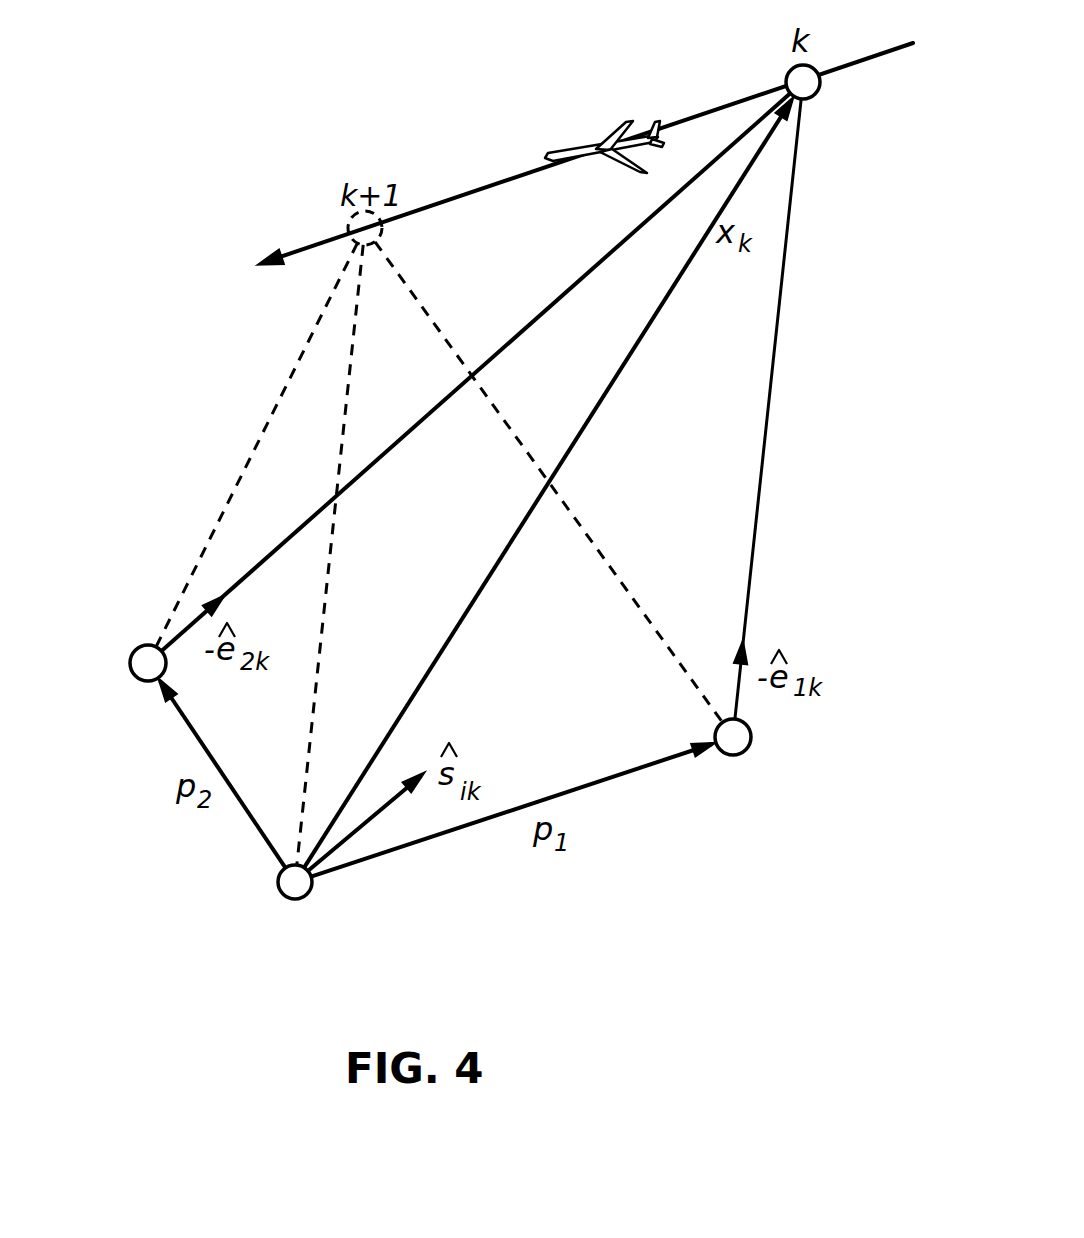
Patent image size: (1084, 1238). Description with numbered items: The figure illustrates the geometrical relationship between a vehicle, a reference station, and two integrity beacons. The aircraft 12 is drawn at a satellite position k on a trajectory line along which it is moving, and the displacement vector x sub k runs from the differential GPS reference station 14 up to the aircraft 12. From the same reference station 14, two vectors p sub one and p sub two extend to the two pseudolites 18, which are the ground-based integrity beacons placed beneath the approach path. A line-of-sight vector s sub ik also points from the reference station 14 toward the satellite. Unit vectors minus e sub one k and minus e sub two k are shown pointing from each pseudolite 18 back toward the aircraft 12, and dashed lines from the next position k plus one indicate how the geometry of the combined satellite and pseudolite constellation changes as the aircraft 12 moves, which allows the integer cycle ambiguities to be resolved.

The aircraft 12 is at (788, 72).
The GPS reference station 14 is at (277, 894).
The pseudolites 18 is at (130, 676).